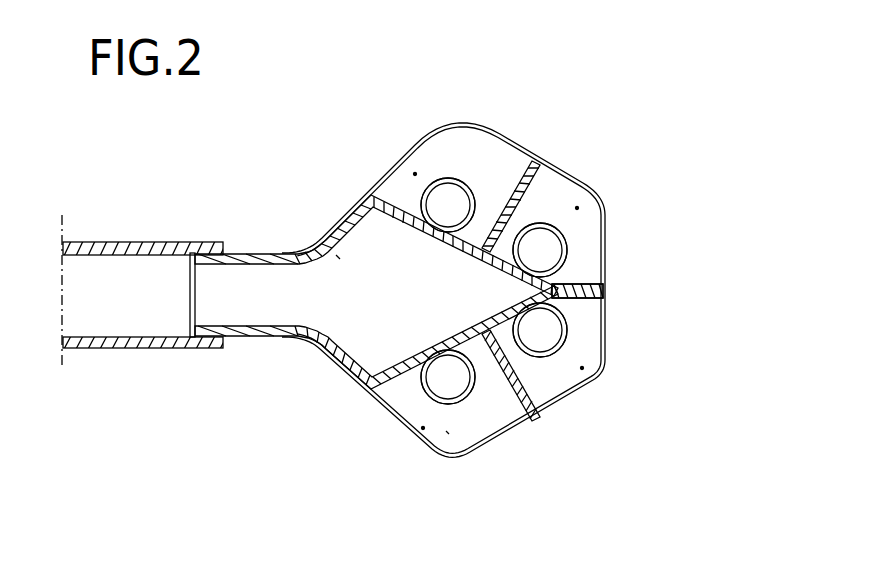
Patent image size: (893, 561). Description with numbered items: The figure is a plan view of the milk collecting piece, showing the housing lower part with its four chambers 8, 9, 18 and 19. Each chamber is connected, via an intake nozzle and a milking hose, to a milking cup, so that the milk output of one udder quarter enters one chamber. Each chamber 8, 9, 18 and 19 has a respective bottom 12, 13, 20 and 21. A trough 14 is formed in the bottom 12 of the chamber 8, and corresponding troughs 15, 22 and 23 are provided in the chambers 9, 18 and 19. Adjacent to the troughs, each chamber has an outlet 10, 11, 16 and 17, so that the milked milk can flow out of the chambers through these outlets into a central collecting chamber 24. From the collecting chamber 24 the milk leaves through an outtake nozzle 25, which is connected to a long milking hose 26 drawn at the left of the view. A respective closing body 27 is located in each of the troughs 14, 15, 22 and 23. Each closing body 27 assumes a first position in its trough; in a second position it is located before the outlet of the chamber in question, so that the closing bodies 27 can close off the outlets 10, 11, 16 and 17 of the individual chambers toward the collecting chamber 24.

The chamber 8 is at (497, 160).
The chamber 9 is at (555, 183).
The outlet 10 is at (418, 222).
The outlet 11 is at (515, 263).
The bottom 12 is at (414, 173).
The bottom 13 is at (577, 207).
The trough 14 is at (435, 183).
The trough 15 is at (565, 235).
The outlet 16 is at (512, 318).
The outlet 17 is at (430, 363).
The chamber 18 is at (448, 433).
The chamber 19 is at (553, 390).
The bottom 20 is at (421, 427).
The bottom 21 is at (582, 368).
The trough 22 is at (458, 403).
The trough 23 is at (568, 331).
The collecting chamber 24 is at (338, 257).
The outtake nozzle 25 is at (364, 263).
The long milking hose 26 is at (118, 247).
The closing body 27 is at (458, 200).